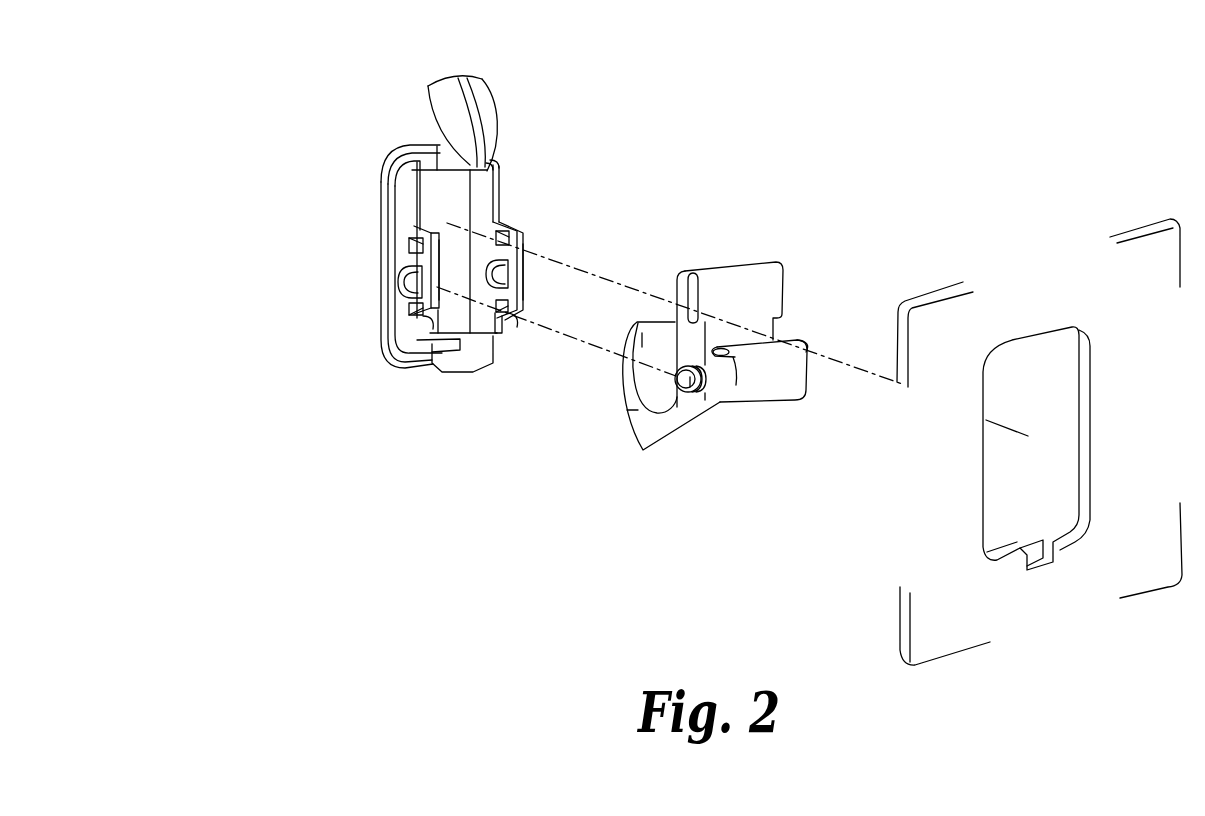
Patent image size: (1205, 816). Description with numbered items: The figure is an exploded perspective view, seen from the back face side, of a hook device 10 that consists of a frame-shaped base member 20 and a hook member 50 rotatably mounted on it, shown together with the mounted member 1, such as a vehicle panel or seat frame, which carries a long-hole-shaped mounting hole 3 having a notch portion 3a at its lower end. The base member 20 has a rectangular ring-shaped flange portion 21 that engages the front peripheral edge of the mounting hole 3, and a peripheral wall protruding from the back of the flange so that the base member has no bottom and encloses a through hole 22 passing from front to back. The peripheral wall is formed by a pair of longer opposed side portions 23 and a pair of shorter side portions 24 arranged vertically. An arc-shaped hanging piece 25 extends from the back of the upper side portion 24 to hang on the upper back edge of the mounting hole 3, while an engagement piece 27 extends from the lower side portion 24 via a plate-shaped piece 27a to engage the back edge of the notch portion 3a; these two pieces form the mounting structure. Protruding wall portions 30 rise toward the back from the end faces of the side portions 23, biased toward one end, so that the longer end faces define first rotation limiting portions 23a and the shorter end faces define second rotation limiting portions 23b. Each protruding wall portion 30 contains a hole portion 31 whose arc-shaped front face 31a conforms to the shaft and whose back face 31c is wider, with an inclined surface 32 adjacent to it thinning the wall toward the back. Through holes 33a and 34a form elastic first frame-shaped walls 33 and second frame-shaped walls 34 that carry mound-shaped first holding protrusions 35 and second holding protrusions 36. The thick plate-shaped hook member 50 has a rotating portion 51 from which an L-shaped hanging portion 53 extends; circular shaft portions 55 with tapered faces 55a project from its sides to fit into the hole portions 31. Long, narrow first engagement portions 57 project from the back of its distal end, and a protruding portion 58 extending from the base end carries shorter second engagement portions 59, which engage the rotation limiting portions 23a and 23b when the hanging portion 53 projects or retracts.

The mounted member 1 is at (1138, 250).
The mounting hole 3 is at (1083, 416).
The notch portion 3a is at (1040, 566).
The hook device 10 is at (800, 155).
The base member 20 is at (449, 234).
The flange portion 21 is at (408, 148).
The through hole 22 is at (450, 342).
The side portions 23 is at (400, 188).
The first rotation limiting portions 23a is at (413, 175).
The second rotation limiting portions 23b is at (425, 333).
The side portions 24 is at (416, 160).
The hanging piece 25 is at (487, 90).
The engagement piece 27 is at (462, 372).
The plate-shaped piece 27a is at (445, 341).
The protruding wall portions 30 is at (441, 210).
The hole portions 31 is at (407, 282).
The front face 31a is at (401, 287).
The back face 31c is at (508, 285).
The inclined surface 32 is at (440, 279).
The first frame-shaped walls 33 is at (420, 234).
The through holes 33a is at (410, 249).
The second frame-shaped walls 34 is at (417, 315).
The through holes 34a is at (413, 310).
The first holding protrusions 35 is at (417, 227).
The second holding protrusions 36 is at (413, 328).
The hook member 50 is at (706, 318).
The rotating portion 51 is at (677, 282).
The hanging portion 53 is at (633, 418).
The shaft portions 55 is at (690, 390).
The tapered face 55a is at (680, 390).
The first engagement portions 57 is at (693, 270).
The protruding portion 58 is at (782, 400).
The second engagement portions 59 is at (802, 341).